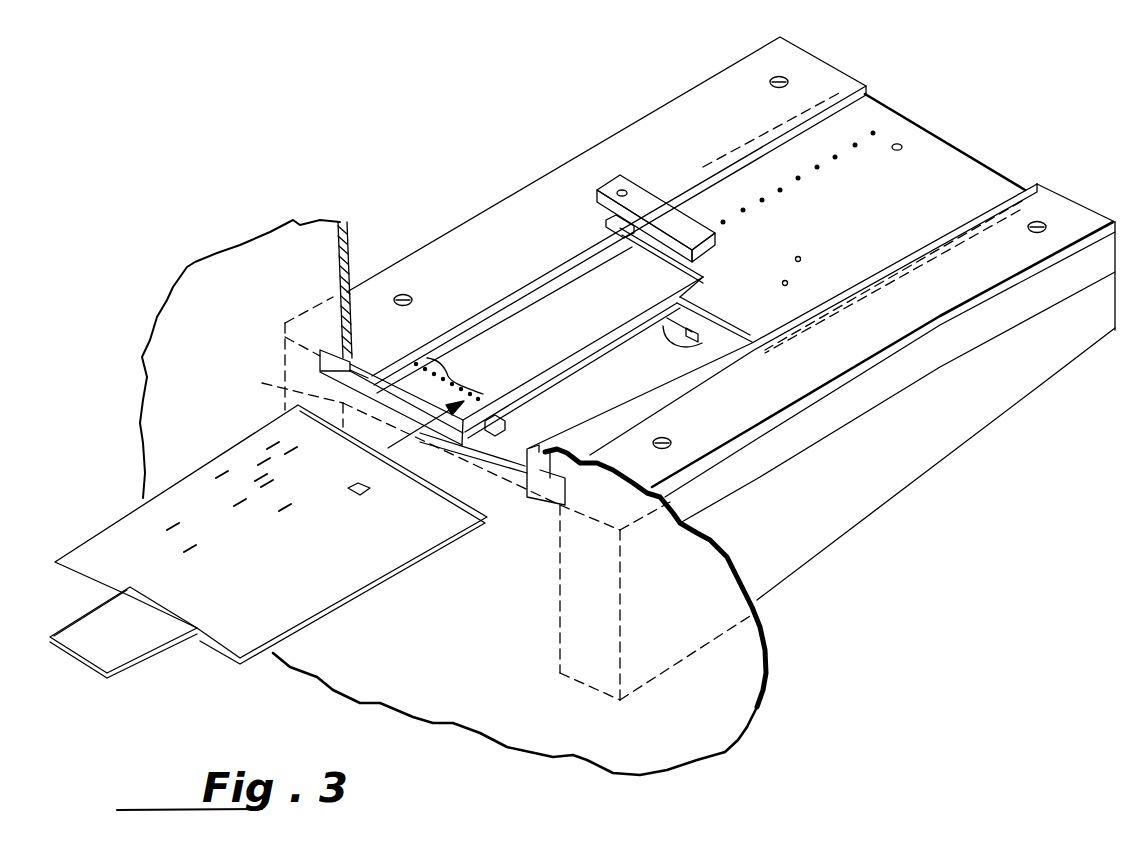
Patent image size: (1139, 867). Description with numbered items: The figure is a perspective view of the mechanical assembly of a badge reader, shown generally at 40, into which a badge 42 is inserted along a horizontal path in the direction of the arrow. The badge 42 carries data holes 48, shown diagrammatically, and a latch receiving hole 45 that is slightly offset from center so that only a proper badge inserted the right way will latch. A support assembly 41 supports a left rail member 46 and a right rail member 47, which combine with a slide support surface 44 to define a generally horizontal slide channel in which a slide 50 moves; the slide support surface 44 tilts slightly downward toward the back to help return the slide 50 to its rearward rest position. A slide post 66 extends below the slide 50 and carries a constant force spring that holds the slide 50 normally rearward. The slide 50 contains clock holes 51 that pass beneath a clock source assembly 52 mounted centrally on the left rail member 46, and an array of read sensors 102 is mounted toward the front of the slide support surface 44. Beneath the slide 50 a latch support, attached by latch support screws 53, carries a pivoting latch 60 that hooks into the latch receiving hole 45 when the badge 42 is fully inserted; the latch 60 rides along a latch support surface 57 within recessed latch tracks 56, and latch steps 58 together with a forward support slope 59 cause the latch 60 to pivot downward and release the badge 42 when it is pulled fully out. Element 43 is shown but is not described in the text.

The reader 40 is at (541, 149).
The support assembly 41 is at (262, 383).
The badge 42 is at (340, 584).
The clip bracket 43 is at (541, 484).
The slide support surface 44 is at (530, 350).
The latch receiving hole 45 is at (370, 497).
The left rail member 46 is at (817, 75).
The right rail member 47 is at (1057, 212).
The data holes 48 is at (195, 553).
The slide 50 is at (932, 176).
The clock holes 51 is at (856, 150).
The clock source assembly 52 is at (676, 218).
The latch support screws 53 is at (789, 280).
The latch tracks 56 is at (547, 396).
The latch support surface 57 is at (614, 376).
The latch steps 58 is at (502, 425).
The forward support slope 59 is at (512, 447).
The latch 60 is at (676, 322).
The slide post 66 is at (900, 143).
The read sensors 102 is at (438, 393).